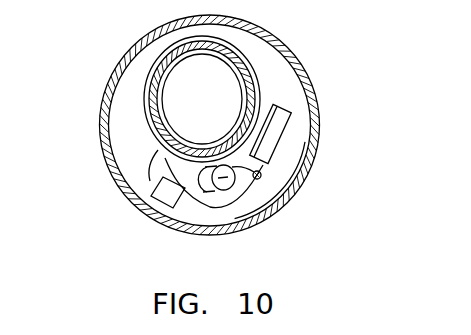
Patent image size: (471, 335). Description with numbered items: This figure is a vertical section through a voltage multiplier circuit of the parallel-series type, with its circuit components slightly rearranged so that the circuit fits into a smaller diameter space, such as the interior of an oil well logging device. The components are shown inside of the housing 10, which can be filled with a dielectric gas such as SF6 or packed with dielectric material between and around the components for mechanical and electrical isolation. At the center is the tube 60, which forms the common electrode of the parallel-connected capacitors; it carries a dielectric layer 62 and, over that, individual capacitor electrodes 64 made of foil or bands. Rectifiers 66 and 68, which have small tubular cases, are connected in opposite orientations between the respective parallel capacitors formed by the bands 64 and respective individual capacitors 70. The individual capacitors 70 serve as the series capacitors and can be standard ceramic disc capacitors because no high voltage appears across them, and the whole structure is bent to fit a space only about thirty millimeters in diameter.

The housing 10 is at (303, 63).
The tube 60 is at (162, 64).
The dielectric layer 62 is at (145, 93).
The individual capacitor electrodes 64 is at (145, 124).
The rectifier 66 is at (162, 207).
The rectifier 68 is at (215, 193).
The individual capacitors 70 is at (281, 138).